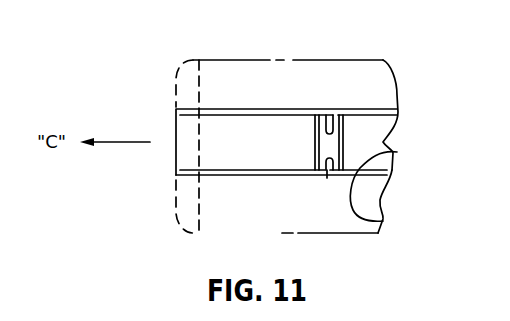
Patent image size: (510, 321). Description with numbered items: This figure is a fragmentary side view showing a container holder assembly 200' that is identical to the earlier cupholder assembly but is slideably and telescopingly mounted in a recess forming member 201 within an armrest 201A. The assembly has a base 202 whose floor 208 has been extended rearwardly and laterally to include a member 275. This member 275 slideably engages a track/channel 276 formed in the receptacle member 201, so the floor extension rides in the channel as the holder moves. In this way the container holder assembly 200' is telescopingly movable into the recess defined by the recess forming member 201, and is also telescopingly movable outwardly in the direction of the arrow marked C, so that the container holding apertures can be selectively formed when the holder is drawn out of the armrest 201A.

The container holder assembly 200' is at (286, 92).
The recess forming member 201 is at (199, 58).
The armrest 201A is at (383, 60).
The base 202 is at (232, 184).
The floor 208 is at (257, 177).
The member 275 is at (383, 220).
The track/channel 276 is at (398, 153).